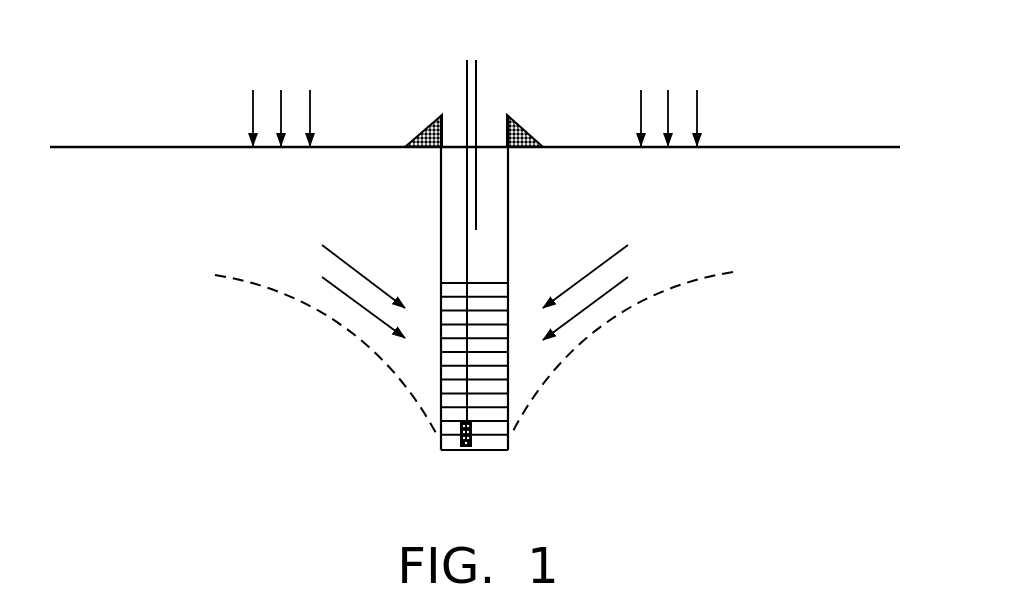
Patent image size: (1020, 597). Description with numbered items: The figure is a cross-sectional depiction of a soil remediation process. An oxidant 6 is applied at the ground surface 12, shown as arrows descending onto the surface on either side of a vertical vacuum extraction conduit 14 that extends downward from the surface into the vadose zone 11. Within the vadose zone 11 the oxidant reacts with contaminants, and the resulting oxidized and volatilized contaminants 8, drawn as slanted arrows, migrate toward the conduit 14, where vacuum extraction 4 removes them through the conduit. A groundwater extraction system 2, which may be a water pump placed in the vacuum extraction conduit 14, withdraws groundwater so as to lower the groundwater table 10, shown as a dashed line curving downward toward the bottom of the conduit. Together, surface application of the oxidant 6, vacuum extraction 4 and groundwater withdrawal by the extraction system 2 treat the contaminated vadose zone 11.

The groundwater extraction system 2 is at (467, 60).
The vacuum extraction 4 is at (476, 60).
The oxidant 6 is at (327, 92).
The oxidized and volatilized contaminants 8 is at (318, 232).
The groundwater table 10 is at (731, 267).
The vadose zone 11 is at (649, 183).
The surface 12 is at (851, 146).
The vacuum extraction conduit 14 is at (512, 250).